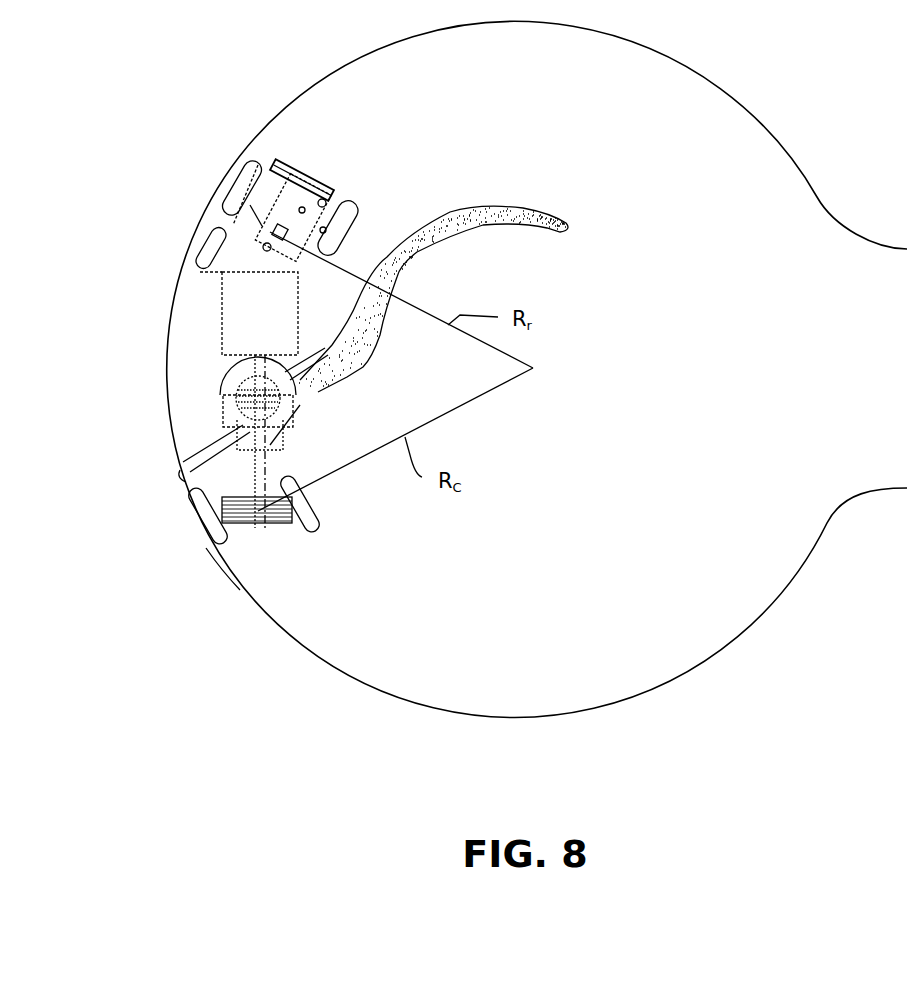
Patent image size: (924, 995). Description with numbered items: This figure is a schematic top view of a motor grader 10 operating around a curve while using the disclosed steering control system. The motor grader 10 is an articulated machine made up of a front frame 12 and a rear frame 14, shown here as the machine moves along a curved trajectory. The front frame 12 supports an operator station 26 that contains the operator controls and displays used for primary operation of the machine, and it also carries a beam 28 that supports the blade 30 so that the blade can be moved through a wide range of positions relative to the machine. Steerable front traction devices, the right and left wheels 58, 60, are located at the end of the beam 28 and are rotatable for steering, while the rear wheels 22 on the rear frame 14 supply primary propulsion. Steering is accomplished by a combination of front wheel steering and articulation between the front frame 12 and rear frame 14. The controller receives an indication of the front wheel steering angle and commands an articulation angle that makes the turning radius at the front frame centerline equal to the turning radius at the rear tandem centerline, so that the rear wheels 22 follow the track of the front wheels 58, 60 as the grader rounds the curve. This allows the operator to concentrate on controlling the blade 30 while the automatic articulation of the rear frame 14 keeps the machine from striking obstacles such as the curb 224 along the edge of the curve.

The motor grader 10 is at (197, 310).
The front frame 12 is at (277, 464).
The rear frame 14 is at (224, 219).
The rear traction devices or wheels 22 is at (347, 235).
The operator station 26 is at (246, 325).
The beam 28 is at (292, 447).
The blade 30 is at (250, 415).
The right wheel 58 is at (243, 545).
The left wheel 60 is at (332, 515).
The curb 224 is at (222, 572).